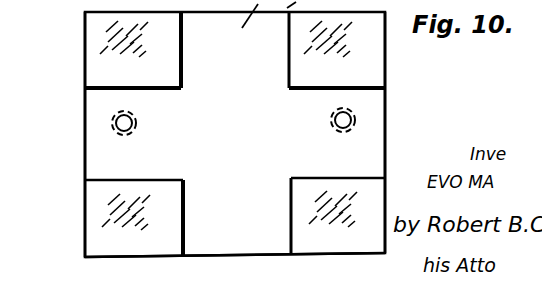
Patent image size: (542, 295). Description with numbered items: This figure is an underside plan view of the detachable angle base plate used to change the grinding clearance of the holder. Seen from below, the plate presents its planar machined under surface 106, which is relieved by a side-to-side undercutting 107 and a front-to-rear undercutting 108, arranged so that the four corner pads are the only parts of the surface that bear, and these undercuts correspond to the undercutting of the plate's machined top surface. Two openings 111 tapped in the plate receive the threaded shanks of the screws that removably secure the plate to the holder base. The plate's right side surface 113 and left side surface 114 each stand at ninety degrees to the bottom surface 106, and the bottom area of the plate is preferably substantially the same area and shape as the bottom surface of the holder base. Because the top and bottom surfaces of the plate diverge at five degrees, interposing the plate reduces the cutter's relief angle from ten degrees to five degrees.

The planar machined under surface 106 is at (115, 33).
The undercutting 107 is at (107, 157).
The undercutting 108 is at (223, 240).
The tapped openings 111 is at (112, 122).
The plate right side surface 113 is at (385, 37).
The plate left side surface 114 is at (85, 65).